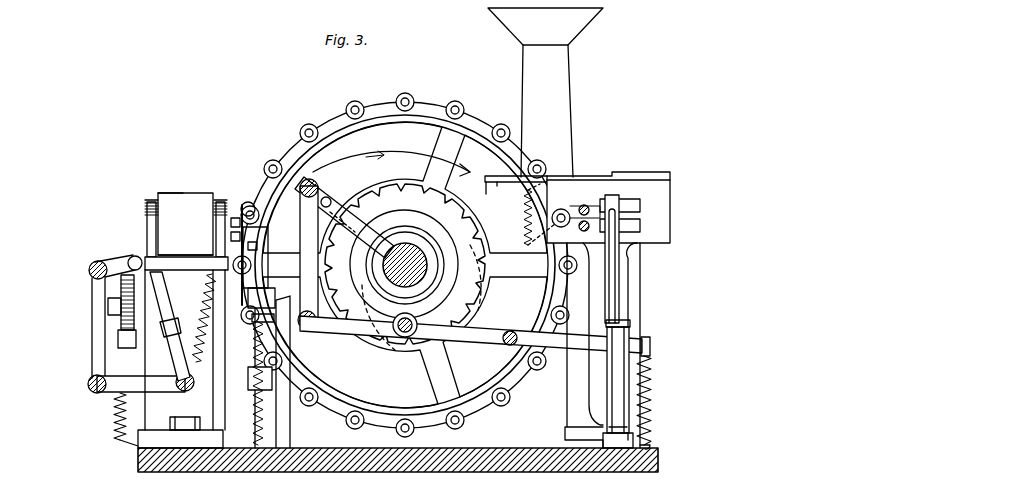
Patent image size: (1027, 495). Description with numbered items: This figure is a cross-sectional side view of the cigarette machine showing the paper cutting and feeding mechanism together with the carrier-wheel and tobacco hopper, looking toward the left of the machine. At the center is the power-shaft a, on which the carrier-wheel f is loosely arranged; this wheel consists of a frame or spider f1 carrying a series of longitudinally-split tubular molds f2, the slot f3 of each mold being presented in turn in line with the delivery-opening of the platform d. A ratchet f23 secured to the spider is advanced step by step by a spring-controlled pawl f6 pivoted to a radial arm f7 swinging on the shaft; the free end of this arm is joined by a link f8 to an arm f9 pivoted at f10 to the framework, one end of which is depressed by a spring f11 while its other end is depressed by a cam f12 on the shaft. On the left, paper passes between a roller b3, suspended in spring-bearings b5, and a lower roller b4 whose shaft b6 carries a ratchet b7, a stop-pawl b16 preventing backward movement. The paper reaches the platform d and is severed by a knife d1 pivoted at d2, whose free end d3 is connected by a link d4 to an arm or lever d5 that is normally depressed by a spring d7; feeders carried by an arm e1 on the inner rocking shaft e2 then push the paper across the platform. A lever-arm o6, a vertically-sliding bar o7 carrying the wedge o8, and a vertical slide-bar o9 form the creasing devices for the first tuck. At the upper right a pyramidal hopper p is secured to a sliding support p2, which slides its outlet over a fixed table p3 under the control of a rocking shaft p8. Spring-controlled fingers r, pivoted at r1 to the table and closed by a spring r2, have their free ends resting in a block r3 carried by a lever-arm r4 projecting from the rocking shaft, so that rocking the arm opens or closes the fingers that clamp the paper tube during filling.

The power-shaft a is at (406, 253).
The carrier-wheel f is at (486, 338).
The frame or spider f1 is at (412, 117).
The longitudinally-split tubular molds f2 is at (455, 102).
The split or slot f3 is at (353, 103).
The spring-controlled pawl f6 is at (343, 192).
The radial arm f7 is at (340, 202).
The link f8 is at (300, 197).
The arm f9 is at (390, 335).
The pivot f10 is at (512, 331).
The spring f11 is at (652, 390).
The cam f12 is at (370, 292).
The ratchet f23 is at (474, 234).
The pyramidal-shaped hopper p is at (557, 73).
The sliding support p2 is at (572, 188).
The fixed table p3 is at (660, 213).
The rocking shaft p8 is at (605, 365).
The spring-controlled fingers r is at (565, 208).
The pivot r1 is at (586, 204).
The spring r2 is at (525, 233).
The block r3 is at (618, 200).
The lever-arm r4 is at (620, 267).
The roller b3 is at (183, 193).
The roller b4 is at (194, 380).
The spring-bearings b5 is at (146, 206).
The shaft b6 is at (107, 305).
The ratchet b7 is at (117, 325).
The stop-pawl b16 is at (120, 345).
The platform d is at (195, 260).
The knife d1 is at (185, 224).
The pivot d2 is at (148, 260).
The free end of knife d3 is at (104, 262).
The link d4 is at (88, 380).
The arm or lever d5 is at (160, 392).
The spring d7 is at (113, 410).
The arm e1 is at (165, 325).
The rocking shaft e2 is at (178, 372).
The lever-arm o6 is at (262, 338).
The vertically-sliding bar o7 is at (256, 405).
The wedge o8 is at (250, 230).
The vertical slide-bar o9 is at (258, 254).